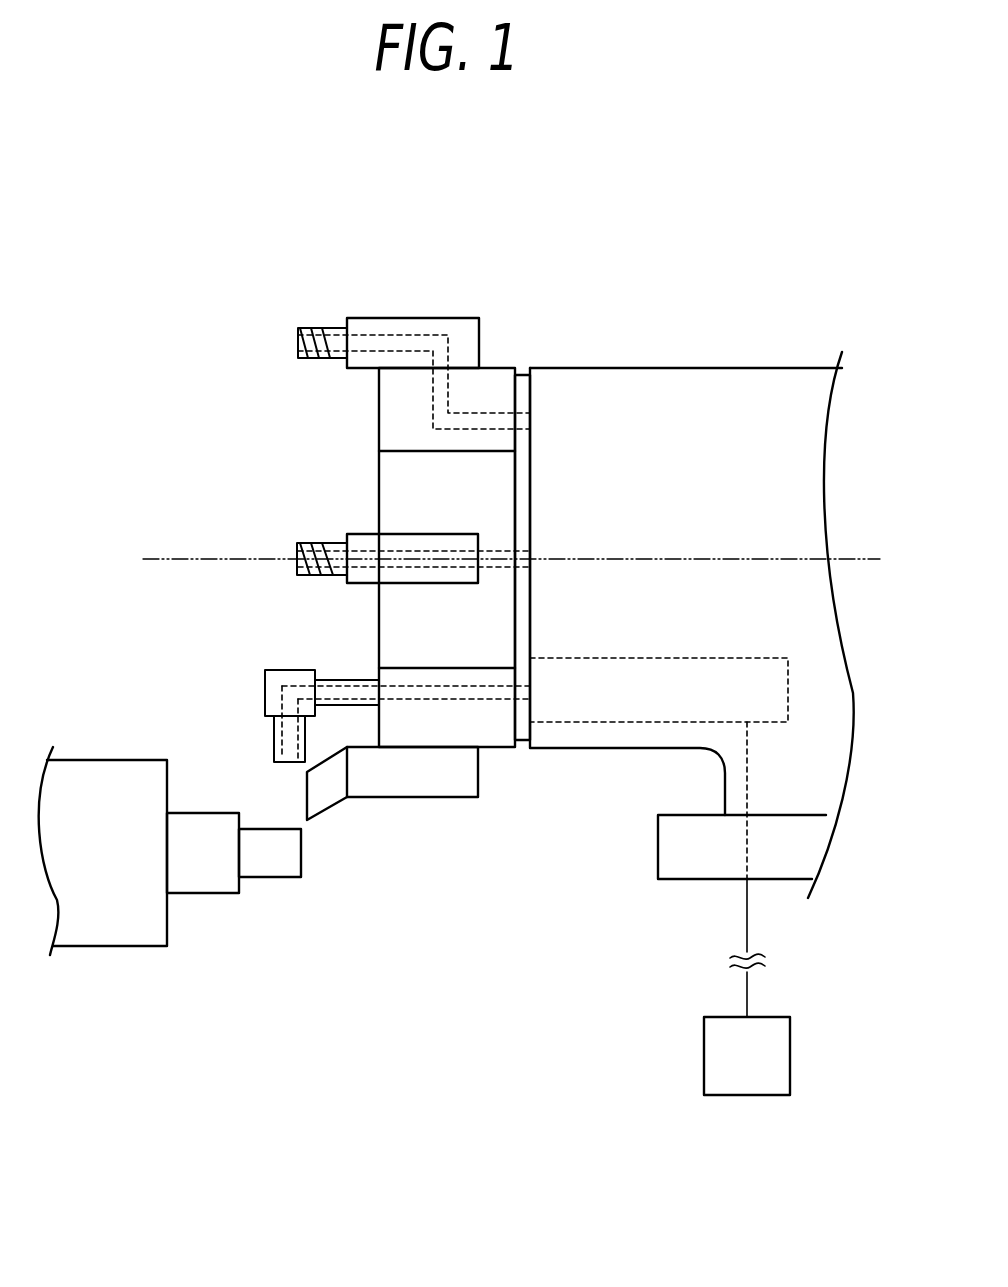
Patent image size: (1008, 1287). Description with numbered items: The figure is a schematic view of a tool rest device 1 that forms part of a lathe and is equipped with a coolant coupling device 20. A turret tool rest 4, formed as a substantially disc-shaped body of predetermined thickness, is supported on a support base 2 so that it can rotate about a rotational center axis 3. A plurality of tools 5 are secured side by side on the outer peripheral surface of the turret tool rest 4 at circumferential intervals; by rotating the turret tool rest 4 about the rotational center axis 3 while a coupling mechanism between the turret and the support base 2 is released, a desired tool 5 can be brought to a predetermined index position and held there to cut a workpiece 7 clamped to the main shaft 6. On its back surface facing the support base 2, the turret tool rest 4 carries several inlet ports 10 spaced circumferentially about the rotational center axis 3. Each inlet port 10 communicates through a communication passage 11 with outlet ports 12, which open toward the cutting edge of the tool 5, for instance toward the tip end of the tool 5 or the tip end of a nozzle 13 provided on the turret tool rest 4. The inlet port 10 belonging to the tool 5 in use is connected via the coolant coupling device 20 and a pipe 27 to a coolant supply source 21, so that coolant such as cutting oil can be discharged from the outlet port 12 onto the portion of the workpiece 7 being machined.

The tool rest device 1 is at (583, 220).
The support base 2 is at (835, 607).
The rotational center axis 3 is at (172, 555).
The turret tool rest 4 is at (395, 632).
The tool 5 is at (463, 333).
The main shaft 6 is at (128, 932).
The workpiece 7 is at (273, 867).
The inlet port 10 is at (519, 423).
The communication passage 11 is at (488, 424).
The outlet port 12 is at (297, 342).
The nozzle 13 is at (275, 735).
The coolant coupling device 20 is at (665, 660).
The coolant supply source 21 is at (778, 1055).
The pipe 27 is at (747, 927).